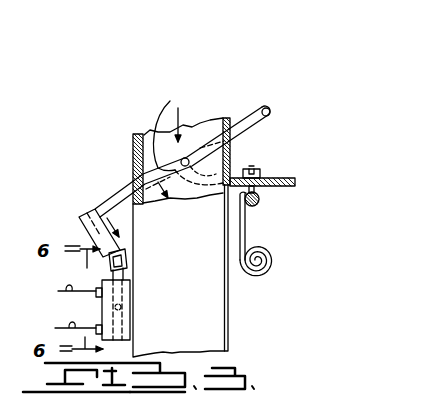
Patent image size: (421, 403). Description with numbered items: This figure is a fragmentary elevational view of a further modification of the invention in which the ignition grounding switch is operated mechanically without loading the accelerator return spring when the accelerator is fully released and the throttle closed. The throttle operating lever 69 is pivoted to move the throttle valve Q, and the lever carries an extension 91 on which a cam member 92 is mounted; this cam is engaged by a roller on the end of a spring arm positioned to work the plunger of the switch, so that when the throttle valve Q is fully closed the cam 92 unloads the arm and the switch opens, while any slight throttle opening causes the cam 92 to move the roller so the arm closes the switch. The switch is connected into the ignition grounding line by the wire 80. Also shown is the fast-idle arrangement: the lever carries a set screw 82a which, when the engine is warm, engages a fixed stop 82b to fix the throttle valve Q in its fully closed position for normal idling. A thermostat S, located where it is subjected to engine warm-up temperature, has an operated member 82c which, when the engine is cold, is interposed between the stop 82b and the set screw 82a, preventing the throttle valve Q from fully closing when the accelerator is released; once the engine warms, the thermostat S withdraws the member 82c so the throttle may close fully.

The throttle operating lever 69 is at (264, 108).
The extension 91 is at (110, 199).
The cam member 92 is at (279, 177).
The set screw 82a is at (260, 170).
The fixed stop 82b is at (259, 204).
The operated member 82c is at (239, 195).
The thermostat S is at (273, 257).
The throttle valve Q is at (167, 133).
The wire 80 is at (55, 328).